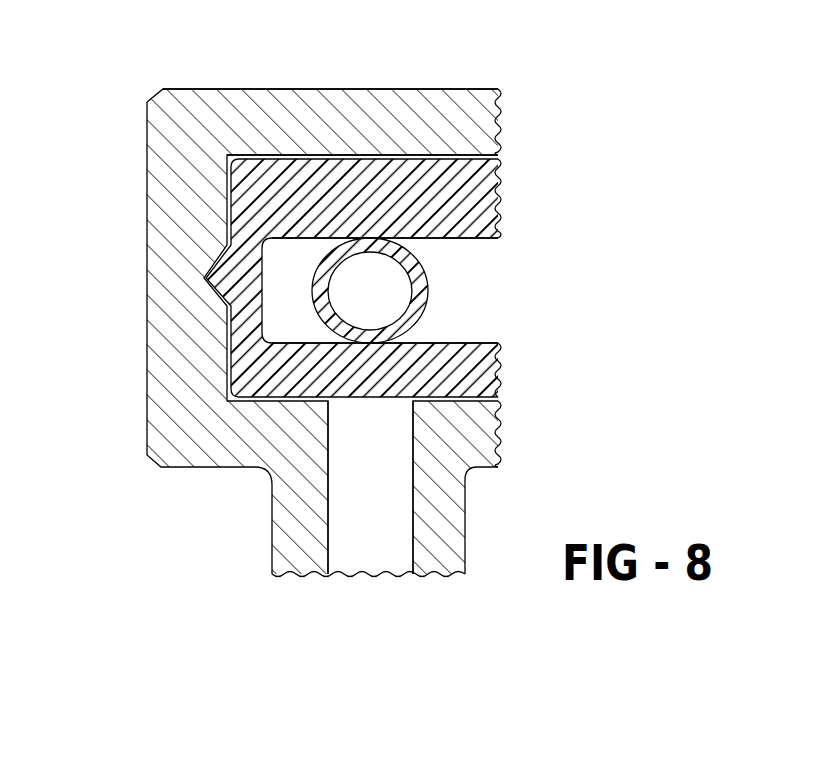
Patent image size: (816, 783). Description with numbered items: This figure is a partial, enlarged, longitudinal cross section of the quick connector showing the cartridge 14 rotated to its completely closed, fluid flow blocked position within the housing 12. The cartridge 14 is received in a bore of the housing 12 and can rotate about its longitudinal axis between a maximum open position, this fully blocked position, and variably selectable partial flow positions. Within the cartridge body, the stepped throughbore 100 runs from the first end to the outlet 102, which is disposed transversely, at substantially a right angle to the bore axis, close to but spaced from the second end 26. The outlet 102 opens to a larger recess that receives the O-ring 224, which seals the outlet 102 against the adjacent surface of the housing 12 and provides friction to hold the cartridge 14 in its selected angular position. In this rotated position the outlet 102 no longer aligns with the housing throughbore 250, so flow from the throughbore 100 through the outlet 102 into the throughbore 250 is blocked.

The housing 12 is at (168, 290).
The cartridge 14 is at (222, 129).
The second end 26 is at (237, 193).
The O-ring 224 is at (400, 283).
The outlet 102 is at (365, 252).
The throughbore 100 is at (478, 323).
The throughbore 250 is at (328, 534).